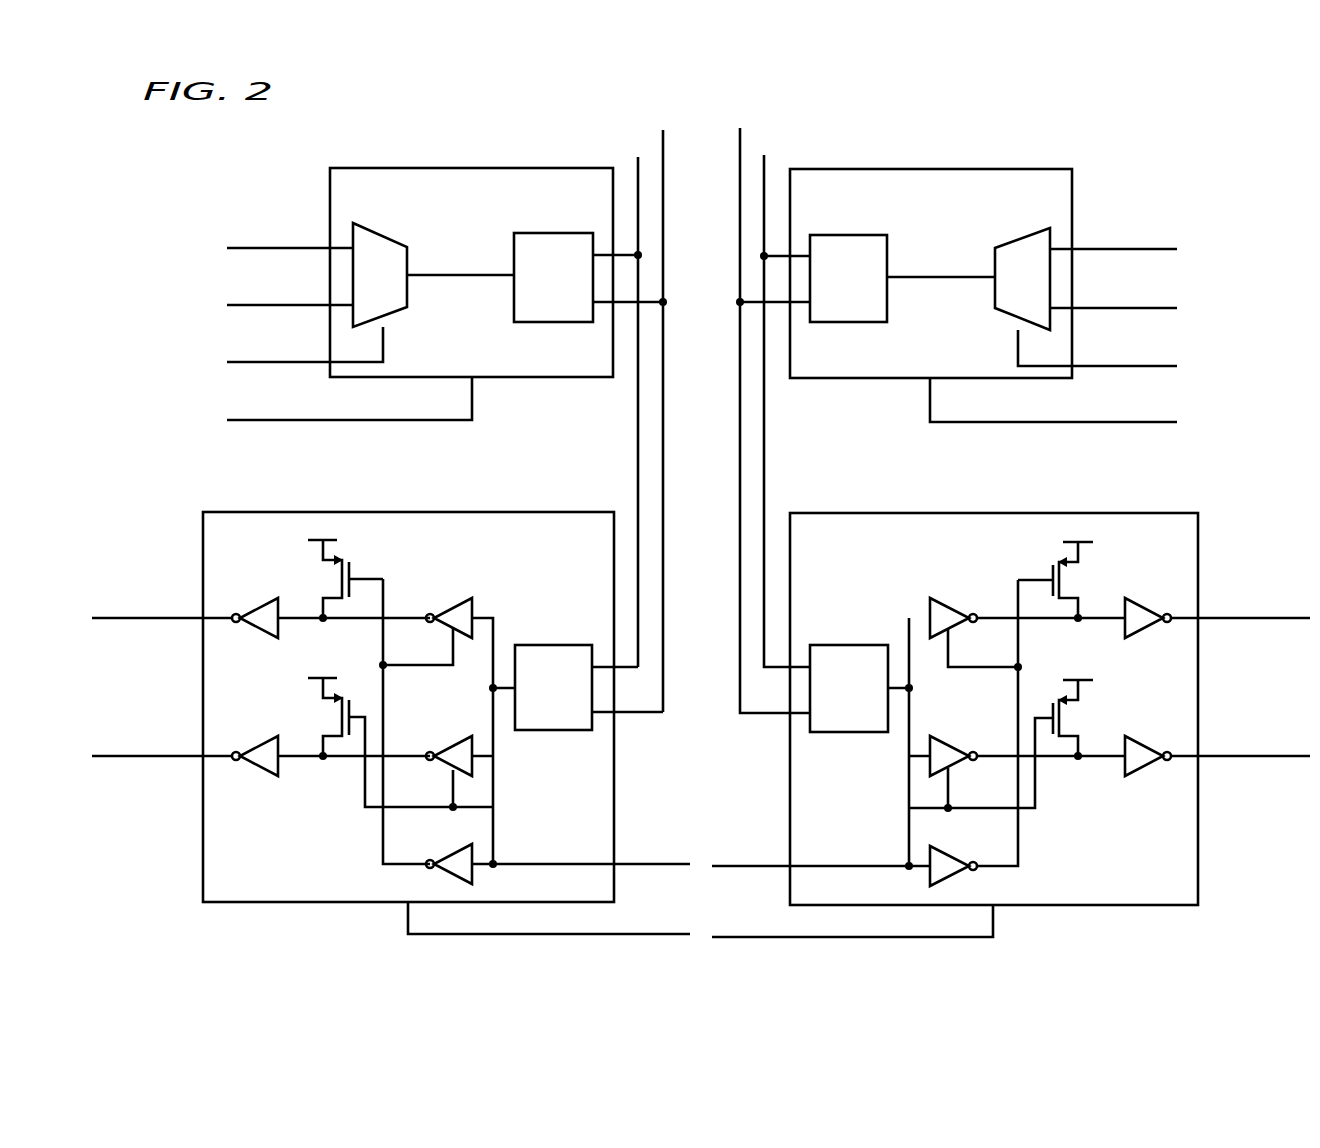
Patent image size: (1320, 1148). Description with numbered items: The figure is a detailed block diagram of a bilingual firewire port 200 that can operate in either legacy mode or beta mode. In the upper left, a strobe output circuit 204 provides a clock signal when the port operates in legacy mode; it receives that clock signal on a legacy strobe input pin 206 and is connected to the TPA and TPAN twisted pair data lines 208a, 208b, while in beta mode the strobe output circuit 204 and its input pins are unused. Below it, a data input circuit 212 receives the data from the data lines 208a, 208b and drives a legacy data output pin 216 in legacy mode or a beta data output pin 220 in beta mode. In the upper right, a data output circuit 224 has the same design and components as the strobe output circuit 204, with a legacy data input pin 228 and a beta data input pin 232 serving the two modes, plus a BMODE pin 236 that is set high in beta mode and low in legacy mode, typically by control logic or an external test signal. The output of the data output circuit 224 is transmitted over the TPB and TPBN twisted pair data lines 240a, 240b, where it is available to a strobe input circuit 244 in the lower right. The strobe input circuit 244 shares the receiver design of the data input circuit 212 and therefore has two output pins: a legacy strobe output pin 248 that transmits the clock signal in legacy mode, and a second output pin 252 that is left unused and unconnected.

The bilingual firewire port 200 is at (1182, 142).
The strobe output circuit 204 is at (397, 168).
The legacy strobe input pin 206 is at (246, 249).
The TPA twisted pair data line 208a is at (621, 143).
The TPAN twisted pair data line 208b is at (641, 115).
The data input circuit 212 is at (541, 512).
The legacy data output pin 216 is at (168, 620).
The beta data output pin 220 is at (168, 758).
The data output circuit 224 is at (1005, 169).
The legacy data input pin 228 is at (1157, 251).
The beta data input pin 232 is at (1157, 310).
The BMODE pin 236 is at (1157, 368).
The TPB twisted pair data line 240a is at (760, 117).
The TPBN twisted pair data line 240b is at (790, 145).
The strobe input circuit 244 is at (863, 513).
The legacy strobe output pin 248 is at (1237, 621).
The second output pin 252 is at (1237, 759).